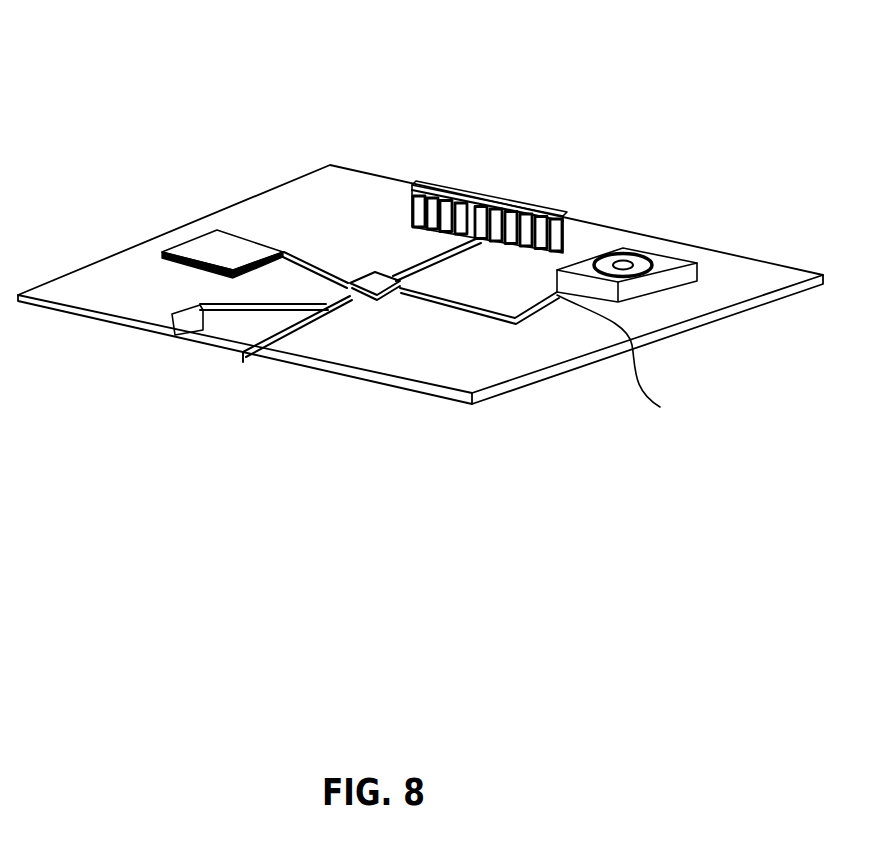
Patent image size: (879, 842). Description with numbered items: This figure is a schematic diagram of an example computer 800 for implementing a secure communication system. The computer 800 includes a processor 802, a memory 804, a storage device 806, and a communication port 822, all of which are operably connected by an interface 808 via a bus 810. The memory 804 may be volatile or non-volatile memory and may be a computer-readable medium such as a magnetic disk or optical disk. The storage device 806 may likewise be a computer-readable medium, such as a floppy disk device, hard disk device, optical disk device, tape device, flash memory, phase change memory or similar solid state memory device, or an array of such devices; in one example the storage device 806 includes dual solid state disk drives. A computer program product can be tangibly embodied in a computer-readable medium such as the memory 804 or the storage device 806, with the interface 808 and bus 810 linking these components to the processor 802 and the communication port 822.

The computer 800 is at (597, 92).
The processor 802 is at (198, 252).
The memory 804 is at (474, 186).
The storage device 806 is at (692, 282).
The interface 808 is at (383, 294).
The bus 810 is at (641, 356).
The communication port 822 is at (185, 318).